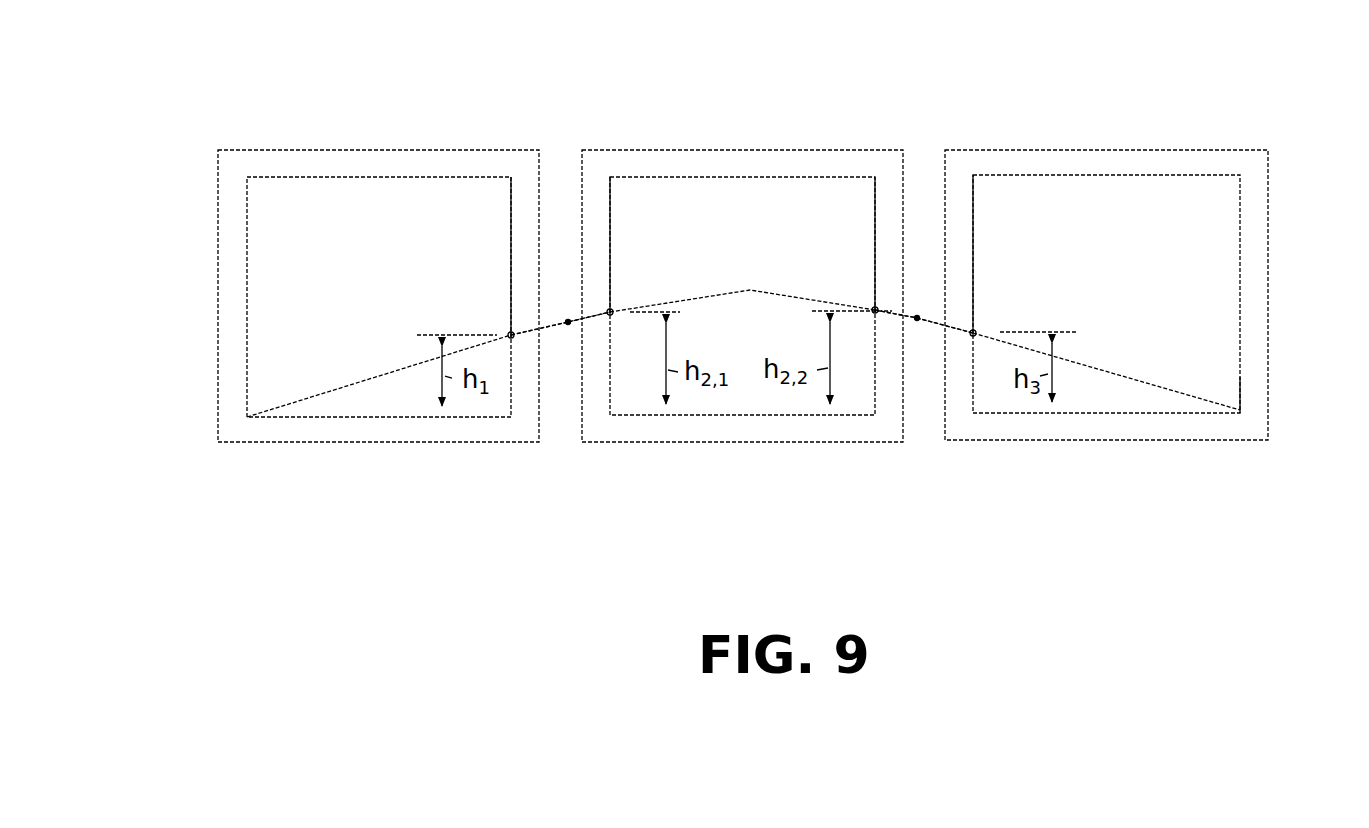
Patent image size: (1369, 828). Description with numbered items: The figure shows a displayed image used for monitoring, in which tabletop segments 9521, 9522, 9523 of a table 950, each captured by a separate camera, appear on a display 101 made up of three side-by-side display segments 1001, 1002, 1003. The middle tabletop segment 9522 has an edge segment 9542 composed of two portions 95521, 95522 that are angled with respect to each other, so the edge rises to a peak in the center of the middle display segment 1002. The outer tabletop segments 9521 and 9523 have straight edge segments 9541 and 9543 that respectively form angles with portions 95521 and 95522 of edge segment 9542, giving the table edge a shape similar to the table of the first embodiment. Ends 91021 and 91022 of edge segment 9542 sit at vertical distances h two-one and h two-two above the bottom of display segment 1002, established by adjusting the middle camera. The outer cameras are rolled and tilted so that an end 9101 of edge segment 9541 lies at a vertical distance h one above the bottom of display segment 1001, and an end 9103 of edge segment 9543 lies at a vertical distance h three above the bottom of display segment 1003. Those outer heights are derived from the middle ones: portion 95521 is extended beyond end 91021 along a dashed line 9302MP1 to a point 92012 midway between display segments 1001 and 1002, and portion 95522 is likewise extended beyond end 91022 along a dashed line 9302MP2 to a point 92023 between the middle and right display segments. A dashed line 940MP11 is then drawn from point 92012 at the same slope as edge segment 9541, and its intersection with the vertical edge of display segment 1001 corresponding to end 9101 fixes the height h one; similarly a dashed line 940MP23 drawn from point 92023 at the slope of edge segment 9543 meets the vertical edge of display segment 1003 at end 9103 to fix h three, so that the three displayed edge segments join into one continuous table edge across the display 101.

The display 101 is at (122, 178).
The display segment 1001 is at (273, 190).
The display segment 1002 is at (830, 180).
The display segment 1003 is at (1216, 183).
The end of edge segment 9101 is at (509, 332).
The end of edge segment 91021 is at (613, 308).
The end of edge segment 91022 is at (878, 307).
The end of edge segment 9103 is at (976, 331).
The point 92012 is at (568, 318).
The point 92023 is at (918, 322).
The dashed line 9302MP1 is at (582, 328).
The dashed line 9302MP2 is at (893, 322).
The dashed line 940MP11 is at (548, 330).
The dashed line 940MP23 is at (962, 335).
The table 950 is at (1162, 358).
The tabletop segment 9521 is at (413, 413).
The tabletop segment 9522 is at (766, 333).
The tabletop segment 9523 is at (1120, 408).
The edge segment 9541 is at (388, 374).
The edge segment 9542 is at (752, 288).
The edge segment 9543 is at (1122, 373).
The portion of edge segment 95521 is at (690, 300).
The portion of edge segment 95522 is at (806, 292).